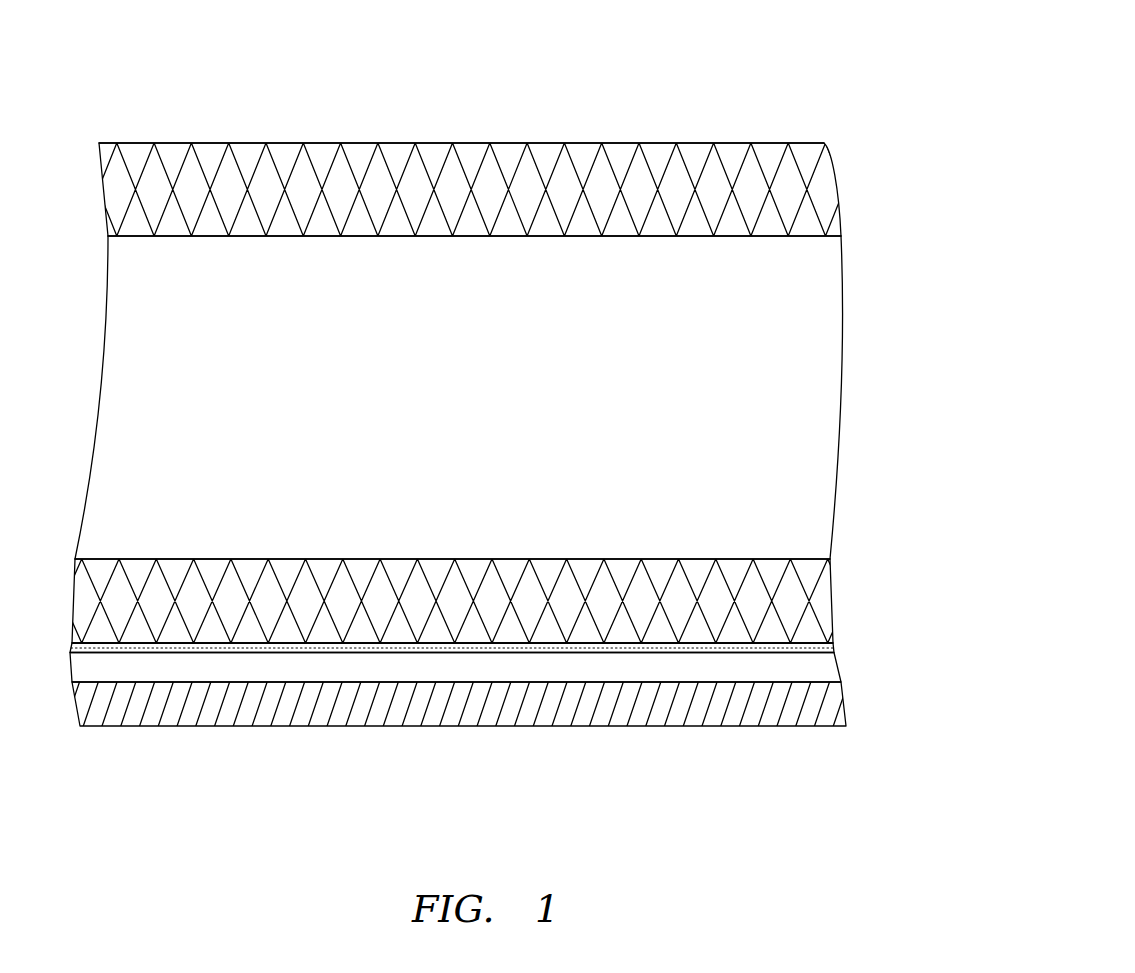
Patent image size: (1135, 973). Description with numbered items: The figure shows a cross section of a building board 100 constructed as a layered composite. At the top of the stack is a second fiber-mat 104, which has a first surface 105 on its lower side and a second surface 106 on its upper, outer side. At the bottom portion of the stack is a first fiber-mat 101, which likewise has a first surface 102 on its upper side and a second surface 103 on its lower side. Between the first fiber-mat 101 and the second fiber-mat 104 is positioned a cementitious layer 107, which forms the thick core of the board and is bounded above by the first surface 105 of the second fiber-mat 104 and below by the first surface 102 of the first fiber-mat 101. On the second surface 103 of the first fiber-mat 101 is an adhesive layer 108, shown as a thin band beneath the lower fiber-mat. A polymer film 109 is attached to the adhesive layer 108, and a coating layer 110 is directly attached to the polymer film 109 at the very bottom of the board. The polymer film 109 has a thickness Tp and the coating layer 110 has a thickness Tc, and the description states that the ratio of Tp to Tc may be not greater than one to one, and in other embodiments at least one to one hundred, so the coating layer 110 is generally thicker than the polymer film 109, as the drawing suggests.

The building board 100 is at (923, 44).
The first fiber-mat 101 is at (817, 598).
The first surface 102 is at (808, 558).
The second surface 103 is at (808, 640).
The second fiber-mat 104 is at (823, 195).
The first surface 105 is at (810, 236).
The second surface 106 is at (747, 143).
The cementitious layer 107 is at (807, 408).
The adhesive layer 108 is at (828, 648).
The polymer film 109 is at (827, 668).
The coating layer 110 is at (830, 712).